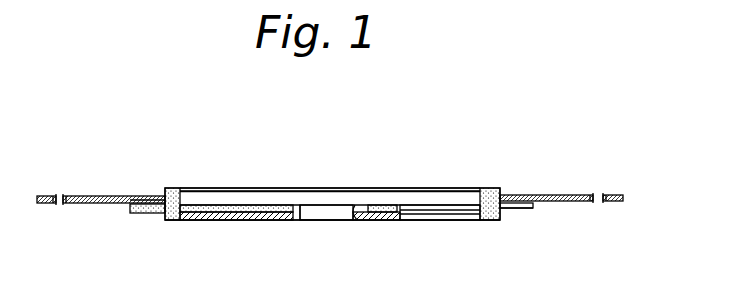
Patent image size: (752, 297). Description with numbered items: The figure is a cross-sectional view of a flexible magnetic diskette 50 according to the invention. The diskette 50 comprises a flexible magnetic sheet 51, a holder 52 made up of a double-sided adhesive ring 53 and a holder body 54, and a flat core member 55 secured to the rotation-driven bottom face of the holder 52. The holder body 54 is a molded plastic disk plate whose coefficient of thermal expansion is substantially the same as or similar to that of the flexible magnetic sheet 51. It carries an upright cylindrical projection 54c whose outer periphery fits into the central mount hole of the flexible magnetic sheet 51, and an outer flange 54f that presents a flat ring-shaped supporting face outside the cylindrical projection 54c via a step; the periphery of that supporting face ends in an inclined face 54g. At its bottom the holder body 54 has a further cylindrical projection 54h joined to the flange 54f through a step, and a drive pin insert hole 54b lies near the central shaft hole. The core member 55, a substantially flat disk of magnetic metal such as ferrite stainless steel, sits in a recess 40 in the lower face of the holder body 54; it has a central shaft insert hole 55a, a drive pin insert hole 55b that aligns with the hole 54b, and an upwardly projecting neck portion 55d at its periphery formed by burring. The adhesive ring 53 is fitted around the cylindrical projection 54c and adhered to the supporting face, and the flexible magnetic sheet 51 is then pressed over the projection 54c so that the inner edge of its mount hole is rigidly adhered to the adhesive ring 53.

The recess 40 is at (195, 221).
The flexible magnetic diskette 50 is at (314, 176).
The flexible magnetic sheet 51 is at (92, 193).
The holder 52 is at (186, 158).
The double-sided adhesive ring 53 is at (147, 193).
The holder body 54 is at (177, 189).
The drive pin insert hole 54b is at (441, 190).
The cylindrical projection 54c is at (490, 190).
The inclined face 54g is at (540, 196).
The cylindrical projection 54h is at (513, 211).
The outer flange 54f is at (528, 208).
The core member 55 is at (230, 221).
The shaft insert hole 55a is at (321, 222).
The neck portion 55d is at (356, 222).
The drive pin insert hole 55b is at (437, 221).